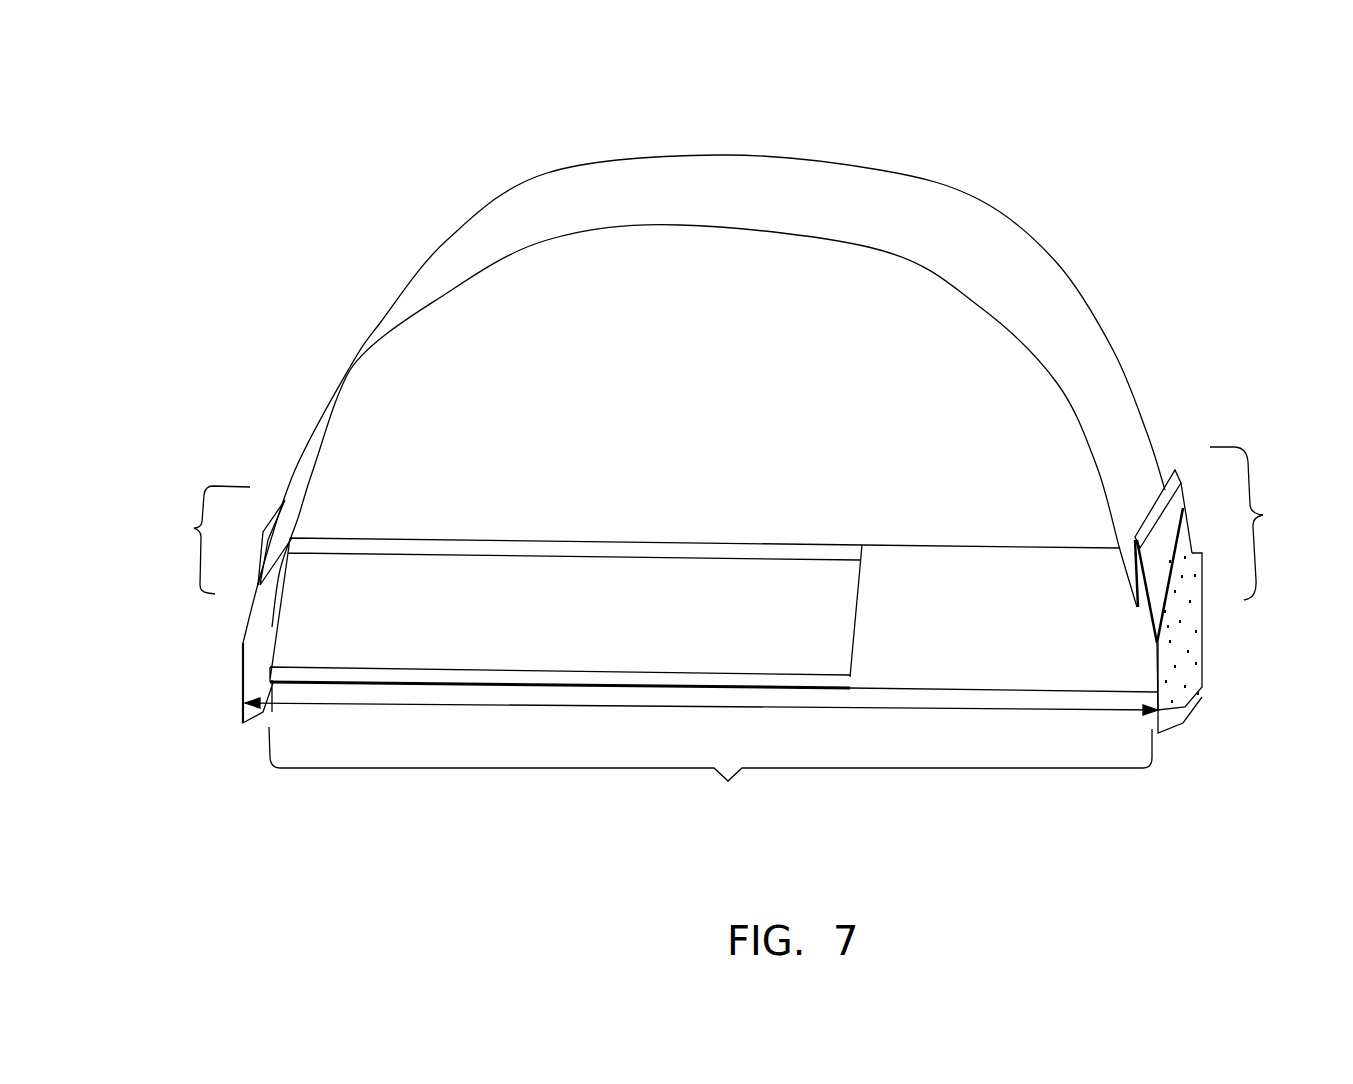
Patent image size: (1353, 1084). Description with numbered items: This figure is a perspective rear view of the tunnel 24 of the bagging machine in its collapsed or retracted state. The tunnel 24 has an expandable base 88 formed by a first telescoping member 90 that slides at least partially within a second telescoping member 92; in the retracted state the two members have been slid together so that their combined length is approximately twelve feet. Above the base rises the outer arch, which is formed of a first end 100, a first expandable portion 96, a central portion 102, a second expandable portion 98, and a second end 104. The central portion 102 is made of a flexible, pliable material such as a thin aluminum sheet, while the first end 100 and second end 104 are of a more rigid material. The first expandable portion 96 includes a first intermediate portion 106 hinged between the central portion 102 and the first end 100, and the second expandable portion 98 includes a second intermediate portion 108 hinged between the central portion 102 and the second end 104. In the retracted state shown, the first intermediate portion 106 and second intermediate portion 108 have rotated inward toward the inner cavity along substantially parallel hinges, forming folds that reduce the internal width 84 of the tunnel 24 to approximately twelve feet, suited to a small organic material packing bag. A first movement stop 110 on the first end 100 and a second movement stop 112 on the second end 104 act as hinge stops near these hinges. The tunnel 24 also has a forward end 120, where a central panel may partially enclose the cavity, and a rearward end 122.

The tunnel 24 is at (330, 157).
The internal width 84 is at (787, 709).
The expandable base 88 is at (710, 775).
The first telescoping member 90 is at (928, 548).
The second telescoping member 92 is at (513, 540).
The first expandable portion 96 is at (193, 540).
The second expandable portion 98 is at (1259, 523).
The first end 100 is at (242, 667).
The central portion 102 is at (720, 155).
The second end 104 is at (1200, 657).
The first intermediate portion 106 is at (258, 585).
The second intermediate portion 108 is at (1138, 585).
The first movement stop 110 is at (280, 510).
The second movement stop 112 is at (1177, 470).
The forward end 120 is at (1057, 263).
The rearward end 122 is at (980, 307).